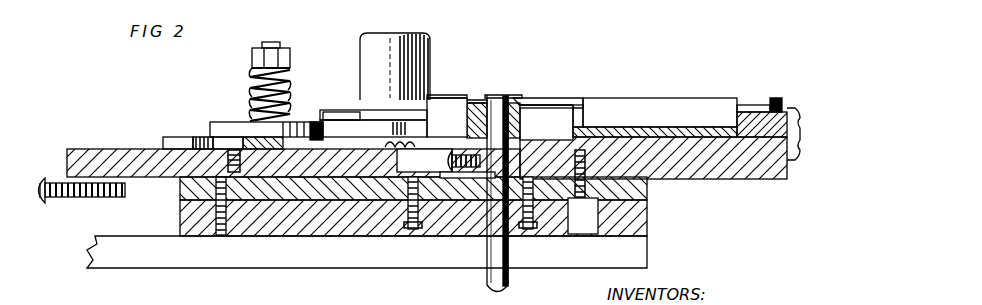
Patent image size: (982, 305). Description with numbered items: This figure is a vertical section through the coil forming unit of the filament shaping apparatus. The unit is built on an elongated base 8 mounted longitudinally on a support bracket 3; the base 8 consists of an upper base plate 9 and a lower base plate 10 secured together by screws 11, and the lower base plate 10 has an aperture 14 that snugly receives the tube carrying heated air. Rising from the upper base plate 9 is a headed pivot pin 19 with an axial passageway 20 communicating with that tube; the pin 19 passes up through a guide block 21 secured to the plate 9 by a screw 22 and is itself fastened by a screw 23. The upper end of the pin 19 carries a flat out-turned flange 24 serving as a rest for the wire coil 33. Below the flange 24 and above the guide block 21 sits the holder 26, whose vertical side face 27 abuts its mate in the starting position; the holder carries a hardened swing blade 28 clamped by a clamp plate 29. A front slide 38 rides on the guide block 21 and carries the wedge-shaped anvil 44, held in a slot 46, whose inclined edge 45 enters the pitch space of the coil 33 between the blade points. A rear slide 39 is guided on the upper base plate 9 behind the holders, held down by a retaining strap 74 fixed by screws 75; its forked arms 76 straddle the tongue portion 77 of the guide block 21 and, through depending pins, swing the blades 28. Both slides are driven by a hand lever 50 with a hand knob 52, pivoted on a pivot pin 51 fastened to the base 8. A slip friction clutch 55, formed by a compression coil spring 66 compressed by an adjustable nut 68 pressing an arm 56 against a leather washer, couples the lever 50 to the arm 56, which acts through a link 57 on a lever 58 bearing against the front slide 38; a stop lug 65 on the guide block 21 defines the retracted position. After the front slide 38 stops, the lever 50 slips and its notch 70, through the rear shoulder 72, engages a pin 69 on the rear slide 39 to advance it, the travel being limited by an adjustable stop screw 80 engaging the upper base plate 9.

The support bracket 3 is at (148, 262).
The base 8 is at (168, 214).
The upper base plate 9 is at (297, 190).
The lower base plate 10 is at (330, 222).
The screws 11 is at (230, 222).
The aperture 14 is at (522, 230).
The pivot pin 19 is at (523, 138).
The axial passageway 20 is at (486, 280).
The guide block 21 is at (700, 180).
The screw 22 is at (605, 133).
The screw 23 is at (447, 161).
The flange 24 is at (513, 103).
The holder 26 is at (472, 100).
The vertical side faces 27 is at (445, 112).
The swing blades 28 is at (480, 103).
The clamp plates 29 is at (437, 97).
The wire coil 33 is at (500, 95).
The front slide 38 is at (670, 127).
The rear slide 39 is at (128, 150).
The anvil 44 is at (548, 98).
The edge 45 is at (524, 105).
The slot 46 is at (576, 108).
The hand lever 50 is at (335, 140).
The pivot pin 51 is at (280, 46).
The hand knob 52 is at (428, 48).
The slip friction clutch 55 is at (238, 93).
The arm 56 is at (305, 120).
The link 57 is at (325, 110).
The lever 58 is at (768, 108).
The stop lug 65 is at (800, 125).
The compression coil spring 66 is at (288, 83).
The adjustable nut 68 is at (251, 60).
The pin 69 is at (231, 135).
The notch 70 is at (216, 142).
The rear shoulder 72 is at (200, 142).
The retaining strap 74 is at (420, 161).
The screws 75 is at (398, 140).
The arms 76 is at (403, 175).
The tongue portion 77 is at (480, 182).
The adjustable stop screw 80 is at (56, 198).